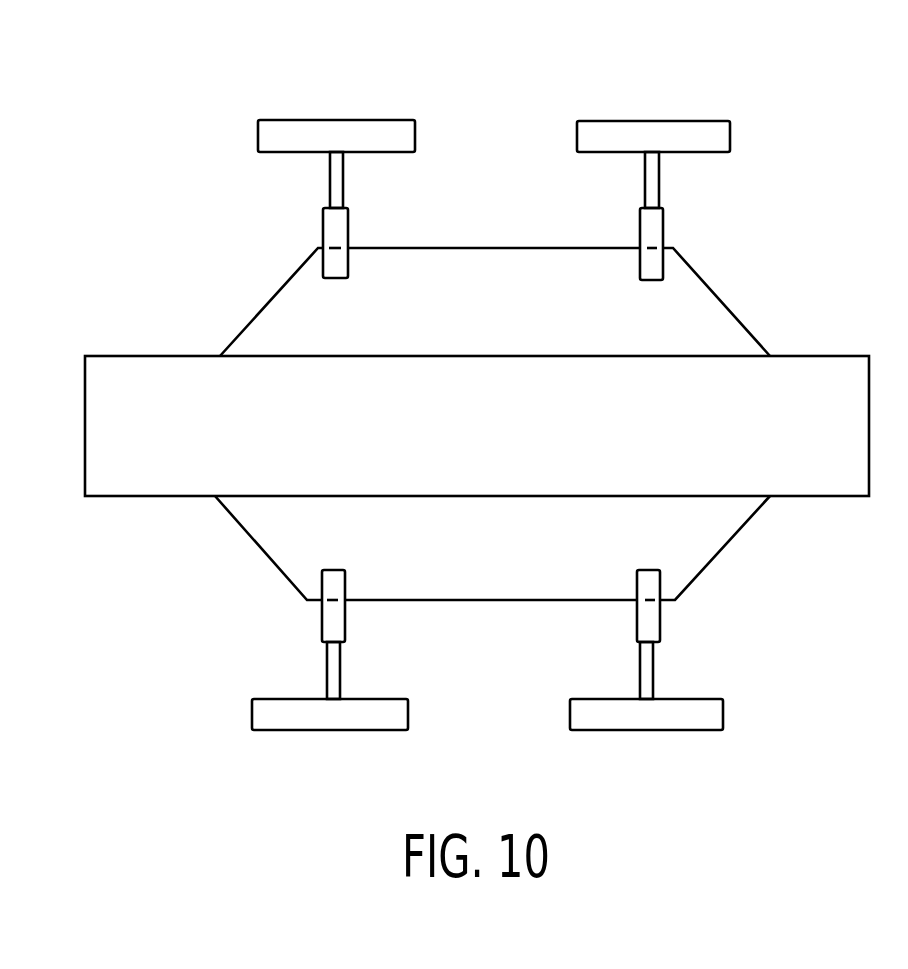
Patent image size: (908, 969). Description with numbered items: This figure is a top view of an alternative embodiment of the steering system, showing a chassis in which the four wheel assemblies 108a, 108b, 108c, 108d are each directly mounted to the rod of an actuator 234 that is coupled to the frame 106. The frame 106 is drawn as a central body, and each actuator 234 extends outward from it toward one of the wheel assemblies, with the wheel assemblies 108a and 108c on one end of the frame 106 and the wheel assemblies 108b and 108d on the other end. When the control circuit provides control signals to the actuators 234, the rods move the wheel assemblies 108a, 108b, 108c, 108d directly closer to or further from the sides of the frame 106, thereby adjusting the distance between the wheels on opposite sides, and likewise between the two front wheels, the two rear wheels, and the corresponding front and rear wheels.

The frame 106 is at (690, 325).
The actuator 234 is at (340, 238).
The wheel assembly 108a is at (272, 137).
The wheel assembly 108b is at (263, 715).
The wheel assembly 108c is at (718, 138).
The wheel assembly 108d is at (712, 715).